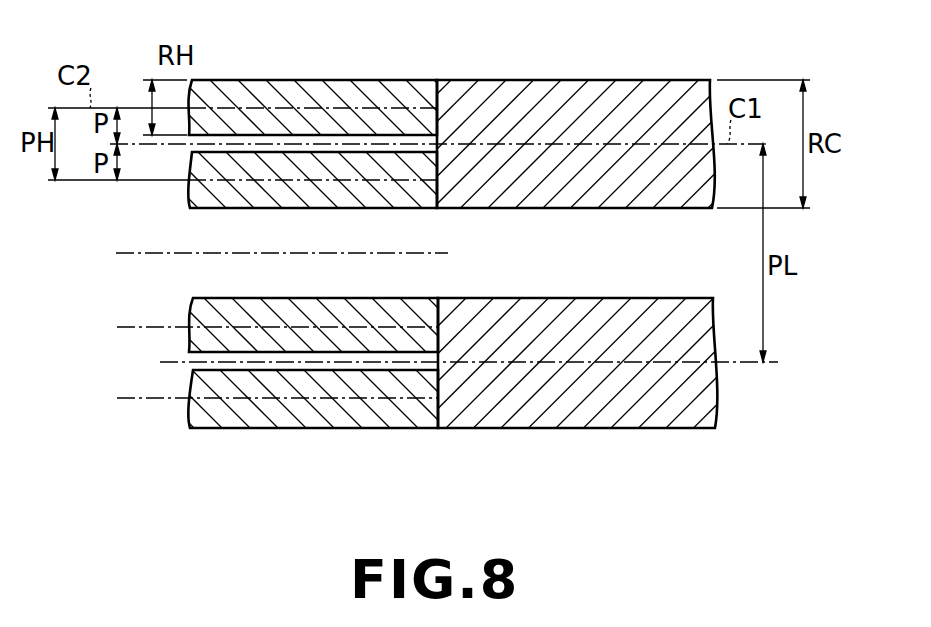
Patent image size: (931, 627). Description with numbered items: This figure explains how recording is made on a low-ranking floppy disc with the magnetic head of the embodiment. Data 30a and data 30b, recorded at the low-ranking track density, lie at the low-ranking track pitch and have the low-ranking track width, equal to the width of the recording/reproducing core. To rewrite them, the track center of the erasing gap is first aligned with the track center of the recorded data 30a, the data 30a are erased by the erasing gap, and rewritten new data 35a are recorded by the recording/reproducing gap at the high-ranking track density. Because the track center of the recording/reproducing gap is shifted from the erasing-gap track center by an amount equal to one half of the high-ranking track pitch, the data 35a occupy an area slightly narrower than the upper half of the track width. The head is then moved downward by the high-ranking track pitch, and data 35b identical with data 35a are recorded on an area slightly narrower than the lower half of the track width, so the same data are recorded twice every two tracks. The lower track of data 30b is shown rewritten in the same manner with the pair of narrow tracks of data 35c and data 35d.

The rewritten new data 35a is at (332, 86).
The data identical with the data 35a 35b is at (229, 197).
The lower left rail section 35c is at (198, 305).
The lower left rail section 35d is at (198, 386).
The data recorded at the low-ranking track density 30a is at (571, 86).
The data recorded at the low-ranking track density 30b is at (541, 306).